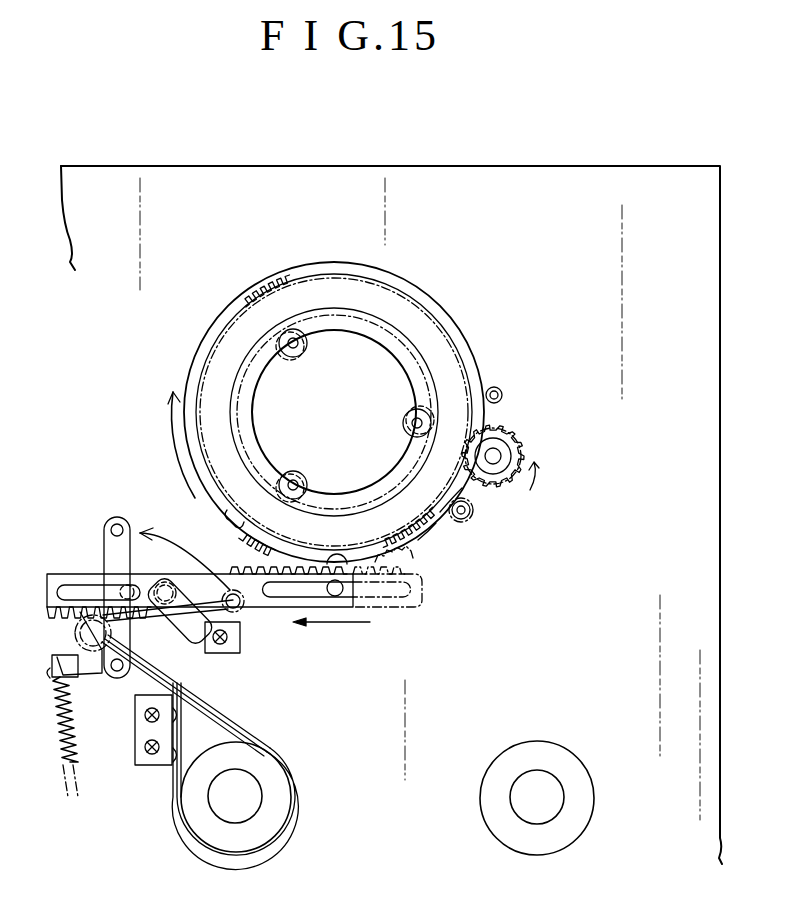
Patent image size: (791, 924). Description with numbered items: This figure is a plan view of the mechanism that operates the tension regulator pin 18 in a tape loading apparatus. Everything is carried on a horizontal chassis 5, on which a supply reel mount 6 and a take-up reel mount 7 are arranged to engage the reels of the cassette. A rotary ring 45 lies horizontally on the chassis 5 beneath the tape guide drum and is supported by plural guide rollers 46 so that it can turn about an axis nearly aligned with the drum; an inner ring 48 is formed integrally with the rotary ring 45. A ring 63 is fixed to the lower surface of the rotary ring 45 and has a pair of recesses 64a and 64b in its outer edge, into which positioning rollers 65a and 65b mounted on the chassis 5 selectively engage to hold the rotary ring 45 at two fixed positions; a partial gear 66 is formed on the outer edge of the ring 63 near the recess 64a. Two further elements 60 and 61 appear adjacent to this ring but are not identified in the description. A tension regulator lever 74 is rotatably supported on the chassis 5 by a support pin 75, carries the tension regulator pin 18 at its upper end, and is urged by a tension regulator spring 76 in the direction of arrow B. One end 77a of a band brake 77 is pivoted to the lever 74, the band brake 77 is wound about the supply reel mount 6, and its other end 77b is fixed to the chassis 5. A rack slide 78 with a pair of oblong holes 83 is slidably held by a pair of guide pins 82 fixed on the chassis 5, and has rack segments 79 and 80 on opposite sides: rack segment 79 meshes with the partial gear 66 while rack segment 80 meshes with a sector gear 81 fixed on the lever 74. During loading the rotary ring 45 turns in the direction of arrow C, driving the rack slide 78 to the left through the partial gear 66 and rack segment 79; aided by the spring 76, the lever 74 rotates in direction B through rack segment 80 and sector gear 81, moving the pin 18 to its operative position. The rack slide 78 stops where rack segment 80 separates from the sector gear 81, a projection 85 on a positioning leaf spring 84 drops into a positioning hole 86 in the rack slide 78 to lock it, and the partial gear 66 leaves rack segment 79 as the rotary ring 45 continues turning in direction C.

The chassis 5 is at (718, 540).
The rotary ring 45 is at (442, 357).
The inner ring 48 is at (402, 347).
The guide rollers 46 is at (303, 350).
The arrow C is at (178, 442).
The partial gear 66 is at (248, 553).
The recess 64a is at (244, 517).
The recess 64b is at (347, 562).
The sector gear 60 is at (447, 517).
The ring 63 is at (430, 535).
The gear 61 is at (522, 452).
The positioning roller 65a is at (503, 392).
The positioning roller 65b is at (472, 510).
The rack slide 78 is at (277, 603).
The rack segment 79 is at (292, 568).
The rack segment 80 is at (60, 621).
The guide pins 82 is at (337, 597).
The oblong holes 83 is at (318, 600).
The sector gear 81 is at (75, 642).
The tension regulator lever 74 is at (106, 546).
The tension regulator pin 18 is at (117, 517).
The support pin 75 is at (117, 671).
The positioning leaf spring 84 is at (193, 627).
The projection 85 is at (165, 584).
The positioning hole 86 is at (180, 573).
The arrow B is at (187, 560).
The tension regulator spring 76 is at (56, 735).
The band brake 77 is at (214, 752).
The one end of band brake 77a is at (180, 690).
The other end of band brake 77b is at (173, 770).
The supply reel mount 6 is at (285, 815).
The take-up reel mount 7 is at (575, 815).